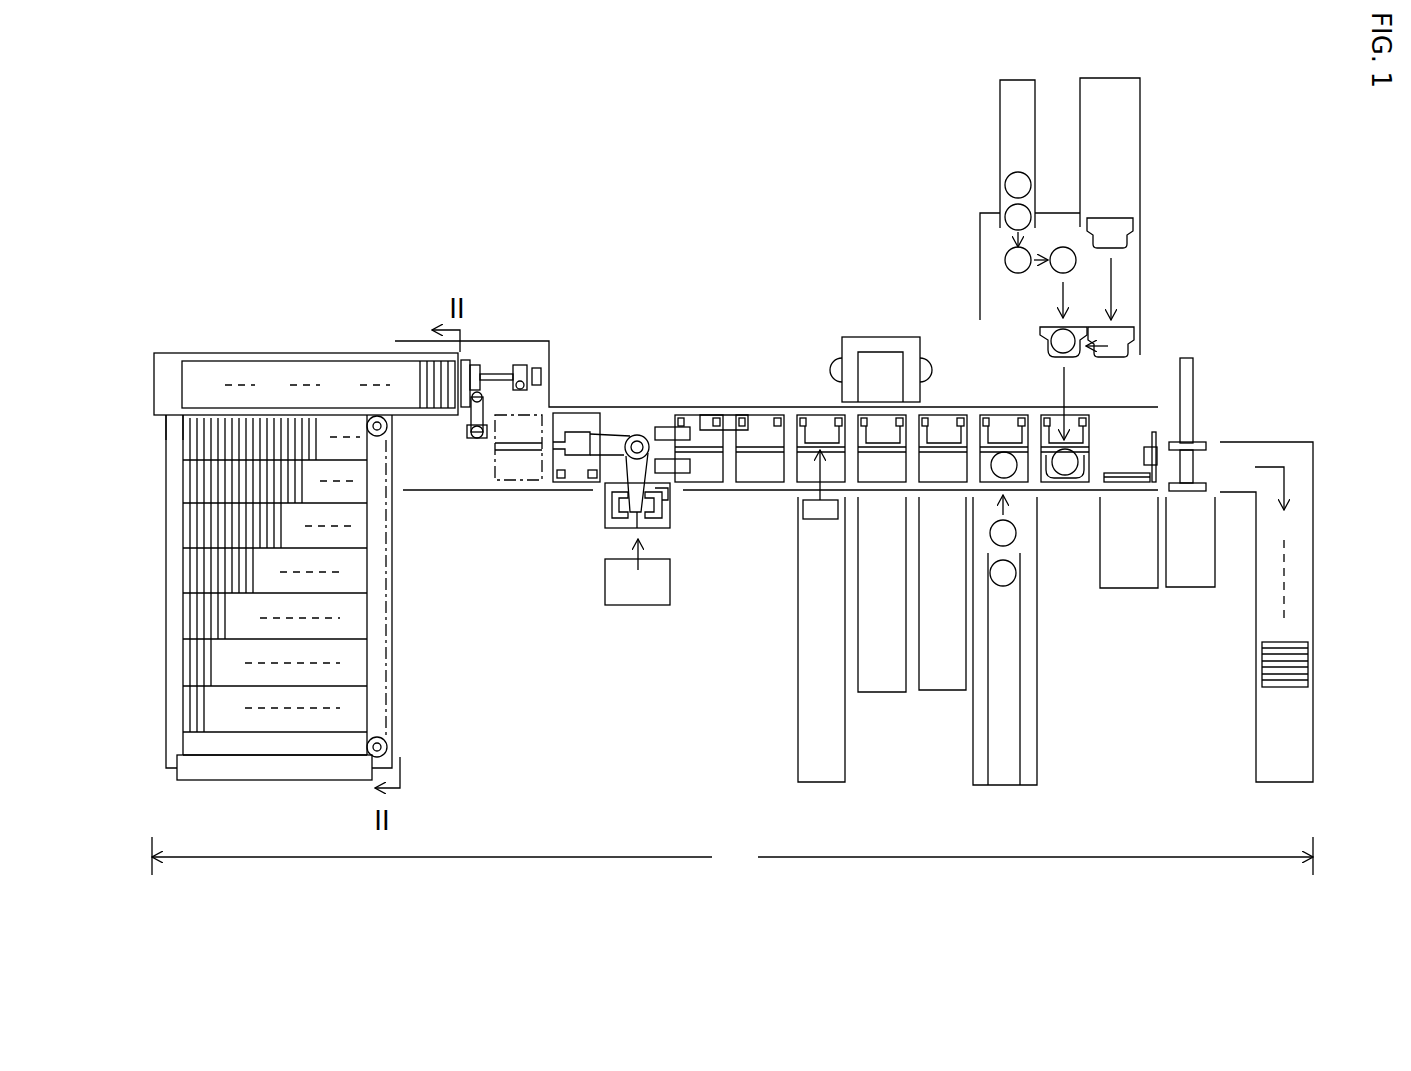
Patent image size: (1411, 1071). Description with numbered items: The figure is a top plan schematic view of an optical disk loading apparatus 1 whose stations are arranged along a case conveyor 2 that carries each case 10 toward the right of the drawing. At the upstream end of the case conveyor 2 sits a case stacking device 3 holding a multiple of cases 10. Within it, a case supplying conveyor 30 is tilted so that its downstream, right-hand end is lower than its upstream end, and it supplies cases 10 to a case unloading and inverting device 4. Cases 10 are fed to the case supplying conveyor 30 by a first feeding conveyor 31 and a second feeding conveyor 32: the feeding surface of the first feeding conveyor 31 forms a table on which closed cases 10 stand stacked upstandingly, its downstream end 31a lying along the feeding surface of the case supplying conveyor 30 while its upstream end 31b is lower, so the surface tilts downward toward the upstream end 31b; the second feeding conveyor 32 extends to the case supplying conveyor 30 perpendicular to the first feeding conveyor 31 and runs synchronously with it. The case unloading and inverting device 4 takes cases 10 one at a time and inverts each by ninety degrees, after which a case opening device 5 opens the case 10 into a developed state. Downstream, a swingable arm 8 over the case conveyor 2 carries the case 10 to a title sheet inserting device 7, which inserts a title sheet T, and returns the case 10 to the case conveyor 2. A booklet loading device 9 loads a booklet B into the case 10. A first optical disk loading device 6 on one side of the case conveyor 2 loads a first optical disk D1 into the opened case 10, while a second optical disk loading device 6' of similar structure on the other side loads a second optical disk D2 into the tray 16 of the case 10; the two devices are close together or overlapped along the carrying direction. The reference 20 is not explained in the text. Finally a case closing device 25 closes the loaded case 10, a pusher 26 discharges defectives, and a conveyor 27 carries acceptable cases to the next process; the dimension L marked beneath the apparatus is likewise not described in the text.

The optical disk loading apparatus 1 is at (750, 178).
The case conveyor 2 is at (660, 413).
The case stacking device 3 is at (152, 650).
The case unloading and inverting device 4 is at (503, 352).
The case opening device 5 is at (520, 498).
The first optical disk loading device 6 is at (1025, 640).
The second optical disk loading device 6' is at (1030, 260).
The title sheet inserting device 7 is at (660, 546).
The swingable arm 8 is at (612, 445).
The booklet loading device 9 is at (872, 328).
The case 10 is at (192, 525).
The tray 16 is at (1123, 233).
The tray supply section 20 is at (792, 498).
The case closing device 25 is at (1147, 447).
The pusher 26 is at (1188, 385).
The conveyor 27 is at (1263, 720).
The case supplying conveyor 30 is at (178, 355).
The first feeding conveyor 31 is at (172, 472).
The downstream end 31a is at (168, 413).
The upstream end 31b is at (175, 775).
The second feeding conveyor 32 is at (390, 652).
The booklet B is at (820, 415).
The first optical disk D1 is at (1005, 573).
The second optical disk D2 is at (1050, 345).
The title sheet T is at (630, 605).
The line length L is at (732, 856).